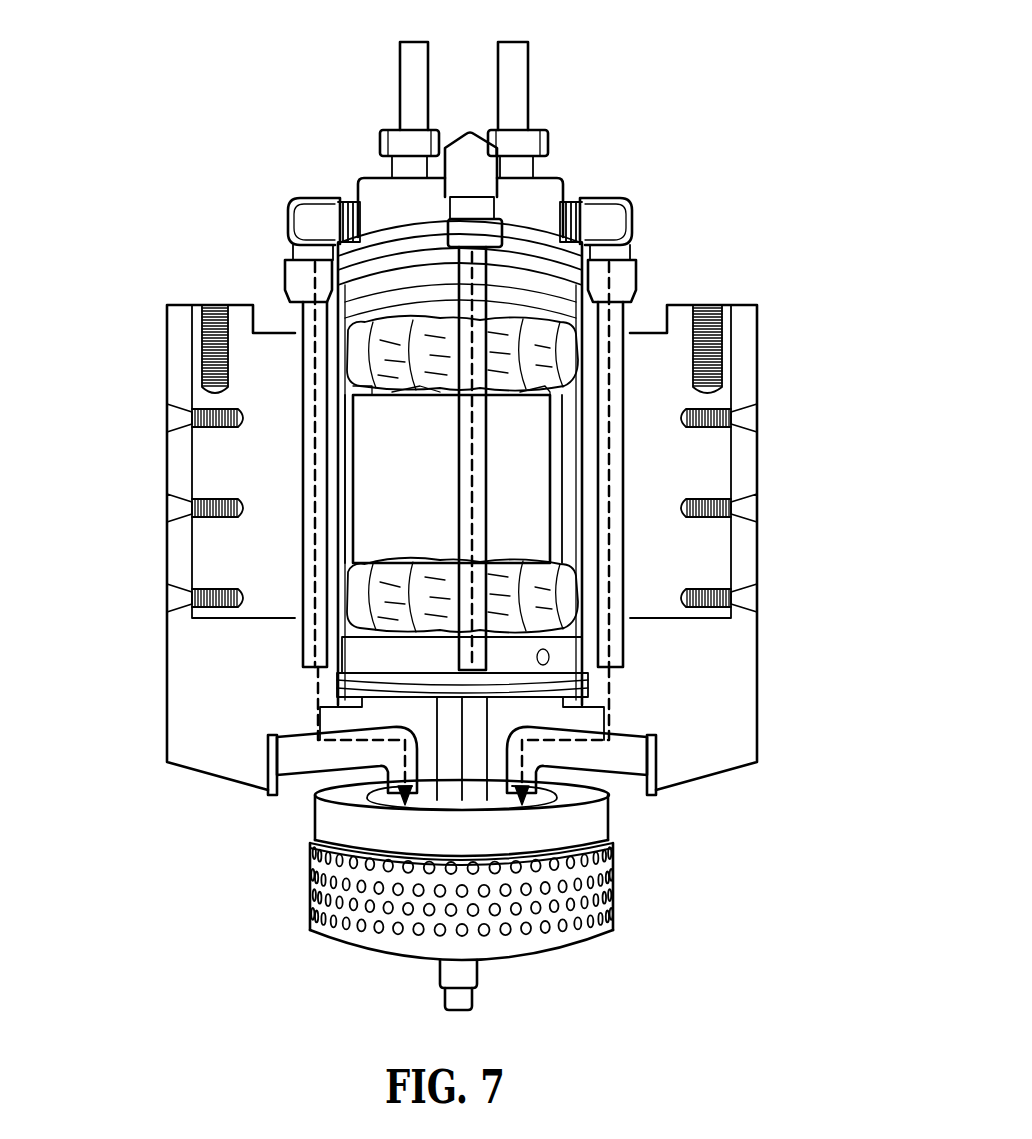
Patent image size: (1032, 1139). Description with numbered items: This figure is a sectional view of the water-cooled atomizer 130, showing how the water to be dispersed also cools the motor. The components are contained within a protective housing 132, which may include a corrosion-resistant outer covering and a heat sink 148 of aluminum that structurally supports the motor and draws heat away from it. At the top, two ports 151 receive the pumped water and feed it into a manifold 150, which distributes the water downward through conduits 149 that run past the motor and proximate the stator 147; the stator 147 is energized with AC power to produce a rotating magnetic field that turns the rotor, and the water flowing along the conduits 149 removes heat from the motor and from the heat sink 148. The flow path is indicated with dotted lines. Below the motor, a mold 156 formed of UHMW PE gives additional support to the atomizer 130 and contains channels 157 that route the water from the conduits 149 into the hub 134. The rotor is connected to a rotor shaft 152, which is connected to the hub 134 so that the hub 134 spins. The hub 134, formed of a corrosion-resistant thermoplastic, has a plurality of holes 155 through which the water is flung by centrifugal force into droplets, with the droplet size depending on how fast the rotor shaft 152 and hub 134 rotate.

The atomizer 130 is at (112, 240).
The protective housing 132 is at (763, 742).
The hub 134 is at (316, 954).
The stator 147 is at (440, 485).
The heat sink 148 is at (231, 547).
The conduits 149 is at (284, 279).
The manifold 150 is at (586, 192).
The ports 151 is at (396, 106).
The rotor shaft 152 is at (487, 982).
The holes 155 is at (562, 894).
The mold 156 is at (712, 703).
The channels 157 is at (319, 757).